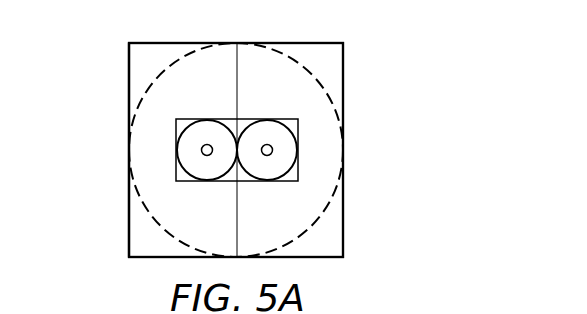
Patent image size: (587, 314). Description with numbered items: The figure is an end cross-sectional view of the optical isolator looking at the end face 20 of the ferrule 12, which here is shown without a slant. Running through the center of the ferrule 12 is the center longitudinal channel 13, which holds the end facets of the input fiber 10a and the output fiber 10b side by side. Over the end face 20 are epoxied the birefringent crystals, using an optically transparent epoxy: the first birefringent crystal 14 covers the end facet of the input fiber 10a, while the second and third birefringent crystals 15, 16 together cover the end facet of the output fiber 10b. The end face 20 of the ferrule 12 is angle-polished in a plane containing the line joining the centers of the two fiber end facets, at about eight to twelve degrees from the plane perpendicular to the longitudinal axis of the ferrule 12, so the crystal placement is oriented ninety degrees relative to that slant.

The input fiber 10a is at (148, 150).
The output fiber 10b is at (326, 145).
The ferrule 12 is at (303, 203).
The center longitudinal channel 13 is at (237, 171).
The first birefringent crystal 14 is at (112, 148).
The second birefringent crystal 15 is at (280, 149).
The third birefringent crystal 16 is at (236, 150).
The end face 20 is at (191, 136).